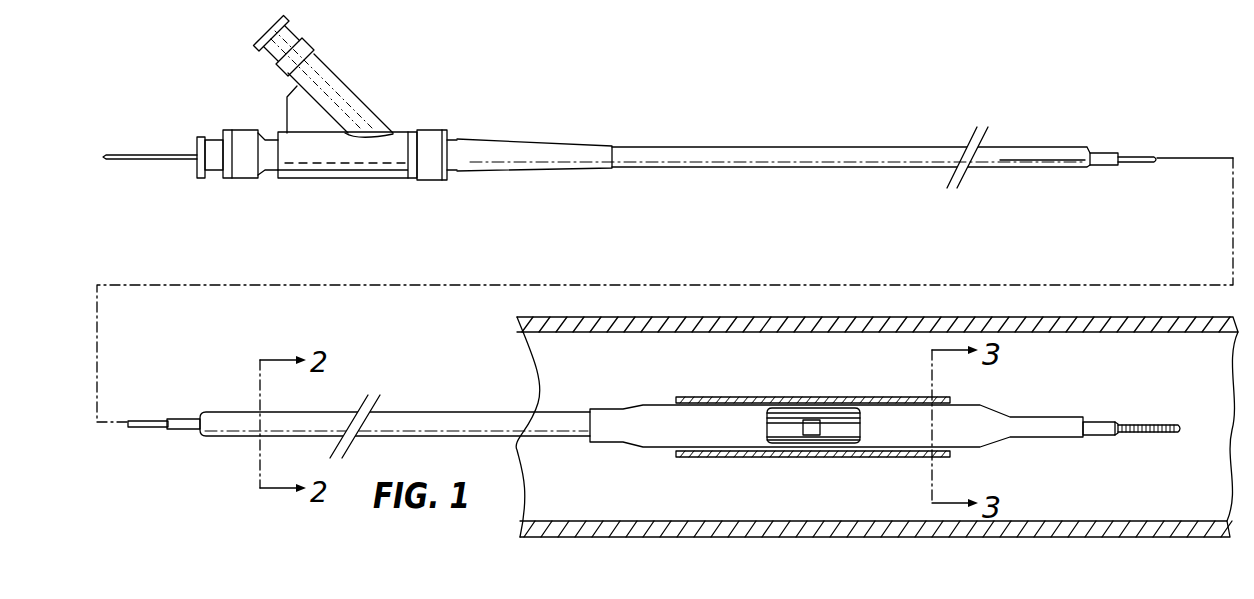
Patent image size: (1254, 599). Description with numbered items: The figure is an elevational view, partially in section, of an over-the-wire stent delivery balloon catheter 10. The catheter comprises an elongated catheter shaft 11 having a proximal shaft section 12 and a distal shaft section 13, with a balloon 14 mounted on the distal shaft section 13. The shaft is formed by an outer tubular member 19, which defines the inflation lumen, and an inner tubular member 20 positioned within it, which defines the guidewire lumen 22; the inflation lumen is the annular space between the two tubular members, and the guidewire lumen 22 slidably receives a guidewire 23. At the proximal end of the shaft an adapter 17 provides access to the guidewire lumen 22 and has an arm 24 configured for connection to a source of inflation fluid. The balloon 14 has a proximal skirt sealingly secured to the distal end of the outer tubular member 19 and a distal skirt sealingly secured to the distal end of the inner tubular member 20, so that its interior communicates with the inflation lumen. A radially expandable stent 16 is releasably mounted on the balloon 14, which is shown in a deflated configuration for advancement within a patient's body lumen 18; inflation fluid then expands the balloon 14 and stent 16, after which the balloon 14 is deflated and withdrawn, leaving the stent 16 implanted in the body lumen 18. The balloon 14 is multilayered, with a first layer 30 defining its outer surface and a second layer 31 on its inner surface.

The stent delivery balloon catheter 10 is at (906, 76).
The catheter shaft 11 is at (885, 167).
The proximal shaft section 12 is at (652, 147).
The distal shaft section 13 is at (480, 412).
The balloon 14 is at (653, 405).
The stent 16 is at (801, 400).
The adapter 17 is at (286, 130).
The body lumen 18 is at (543, 317).
The outer tubular member 19 is at (1007, 160).
The inner tubular member 20 is at (1103, 153).
The guidewire lumen 22 is at (1118, 435).
The guidewire 23 is at (150, 155).
The arm 24 is at (357, 92).
The first layer 30 is at (822, 446).
The second layer 31 is at (783, 443).